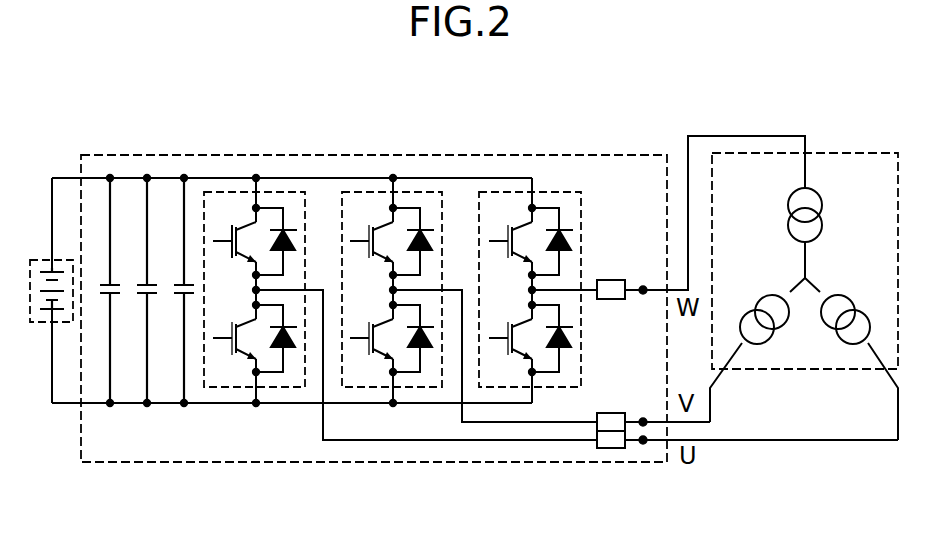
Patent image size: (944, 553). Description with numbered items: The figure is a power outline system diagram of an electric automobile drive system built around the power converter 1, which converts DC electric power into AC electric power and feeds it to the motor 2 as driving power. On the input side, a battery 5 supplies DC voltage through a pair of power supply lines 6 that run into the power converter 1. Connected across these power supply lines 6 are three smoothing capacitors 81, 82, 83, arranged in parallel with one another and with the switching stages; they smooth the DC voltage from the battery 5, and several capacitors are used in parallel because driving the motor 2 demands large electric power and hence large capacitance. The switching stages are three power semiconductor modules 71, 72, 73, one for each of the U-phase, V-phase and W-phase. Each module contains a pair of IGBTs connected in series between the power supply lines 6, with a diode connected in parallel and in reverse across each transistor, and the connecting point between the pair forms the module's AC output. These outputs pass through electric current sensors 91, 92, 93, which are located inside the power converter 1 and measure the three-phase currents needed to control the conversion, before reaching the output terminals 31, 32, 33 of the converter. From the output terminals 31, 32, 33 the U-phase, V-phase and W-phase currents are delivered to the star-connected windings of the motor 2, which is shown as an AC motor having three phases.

The power converter 1 is at (618, 155).
The motor 2 is at (863, 153).
The battery 5 is at (44, 260).
The power supply lines 6 is at (52, 178).
The output terminal 31 is at (645, 446).
The output terminal 32 is at (644, 417).
The output terminal 33 is at (644, 285).
The power semiconductor module 71 is at (218, 191).
The power semiconductor module 72 is at (356, 191).
The power semiconductor module 73 is at (495, 191).
The smoothing capacitor 81 is at (110, 283).
The smoothing capacitor 82 is at (147, 300).
The smoothing capacitor 83 is at (181, 283).
The electric current sensor 91 is at (607, 448).
The electric current sensor 92 is at (607, 413).
The electric current sensor 93 is at (607, 279).